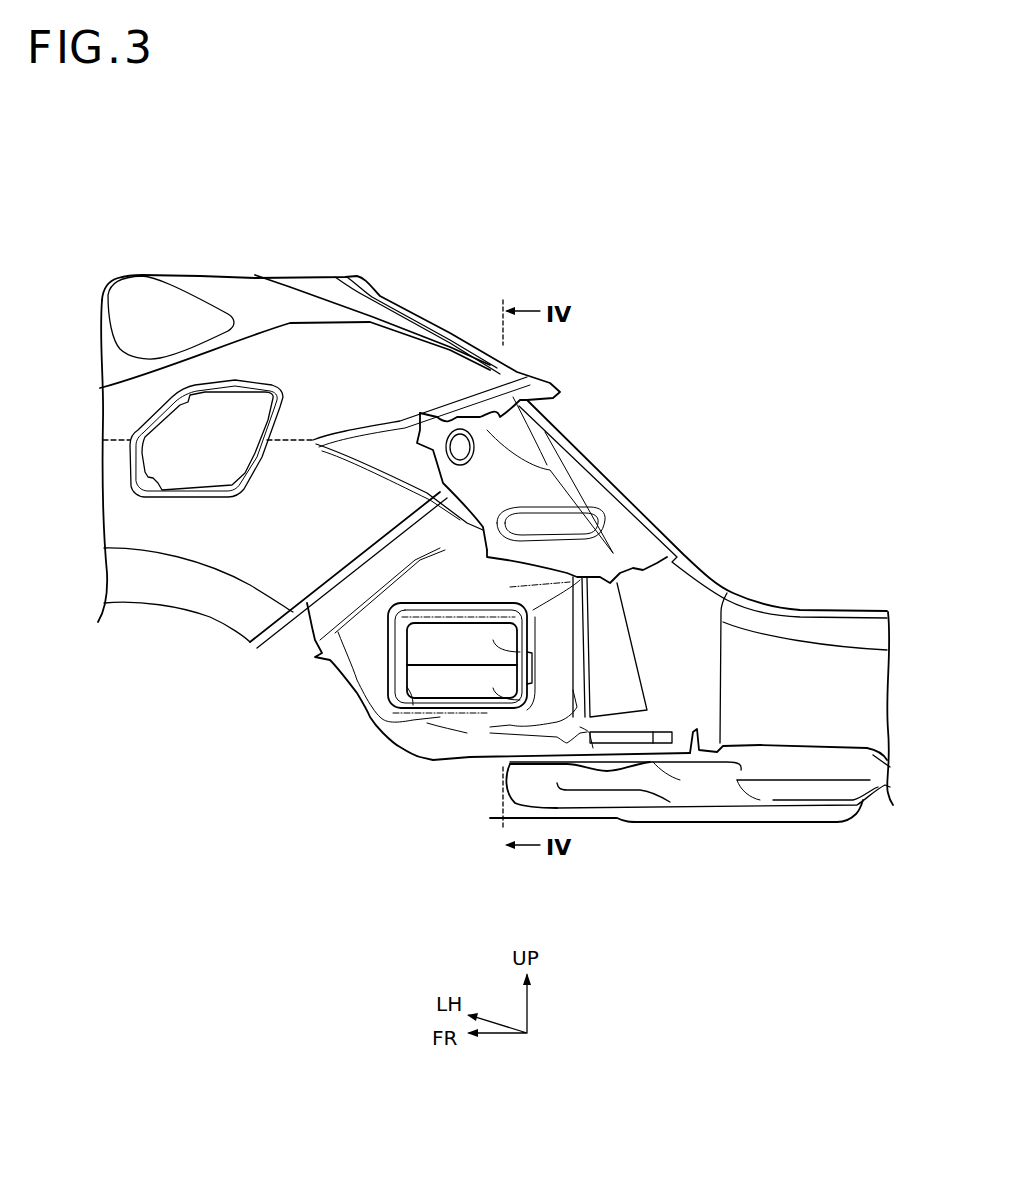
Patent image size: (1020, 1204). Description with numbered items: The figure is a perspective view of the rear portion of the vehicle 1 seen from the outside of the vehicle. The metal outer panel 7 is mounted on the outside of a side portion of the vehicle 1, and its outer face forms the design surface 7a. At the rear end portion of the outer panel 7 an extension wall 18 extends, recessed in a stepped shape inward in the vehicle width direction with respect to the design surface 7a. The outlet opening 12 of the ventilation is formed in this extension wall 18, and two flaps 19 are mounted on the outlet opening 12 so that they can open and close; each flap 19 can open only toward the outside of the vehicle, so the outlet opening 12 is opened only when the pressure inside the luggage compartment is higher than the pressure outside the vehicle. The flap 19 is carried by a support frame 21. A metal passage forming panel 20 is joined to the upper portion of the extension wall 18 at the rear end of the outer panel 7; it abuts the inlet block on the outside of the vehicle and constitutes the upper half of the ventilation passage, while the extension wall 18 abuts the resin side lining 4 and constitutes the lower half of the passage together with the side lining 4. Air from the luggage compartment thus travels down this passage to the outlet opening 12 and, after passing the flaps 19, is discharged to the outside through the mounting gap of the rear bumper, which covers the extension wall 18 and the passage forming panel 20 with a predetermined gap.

The vehicle 1 is at (553, 227).
The side lining 4 is at (683, 697).
The outer panel 7 is at (317, 337).
The design surface 7a is at (200, 528).
The outlet opening 12 is at (407, 720).
The extension wall 18 is at (370, 670).
The flap 19 is at (523, 705).
The passage forming panel 20 is at (550, 467).
The support frame 21 is at (430, 722).